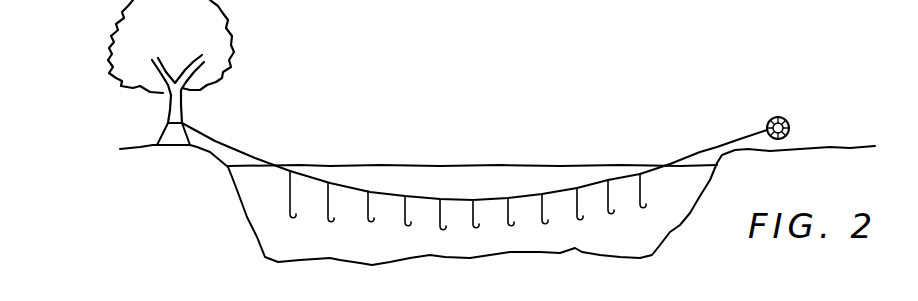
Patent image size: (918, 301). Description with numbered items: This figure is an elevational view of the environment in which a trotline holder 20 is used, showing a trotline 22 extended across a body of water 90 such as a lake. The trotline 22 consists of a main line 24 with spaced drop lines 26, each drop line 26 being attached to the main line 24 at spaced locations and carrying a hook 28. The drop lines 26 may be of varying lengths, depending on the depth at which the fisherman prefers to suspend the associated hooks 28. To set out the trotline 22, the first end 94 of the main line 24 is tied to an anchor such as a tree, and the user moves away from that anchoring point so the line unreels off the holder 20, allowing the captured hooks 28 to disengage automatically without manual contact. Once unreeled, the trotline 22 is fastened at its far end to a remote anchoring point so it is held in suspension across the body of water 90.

The holder 20 is at (798, 120).
The trotline 22 is at (608, 168).
The main line 24 is at (716, 146).
The drop line 26 is at (288, 198).
The hook 28 is at (548, 223).
The body of water 90 is at (362, 154).
The first end 94 is at (190, 121).